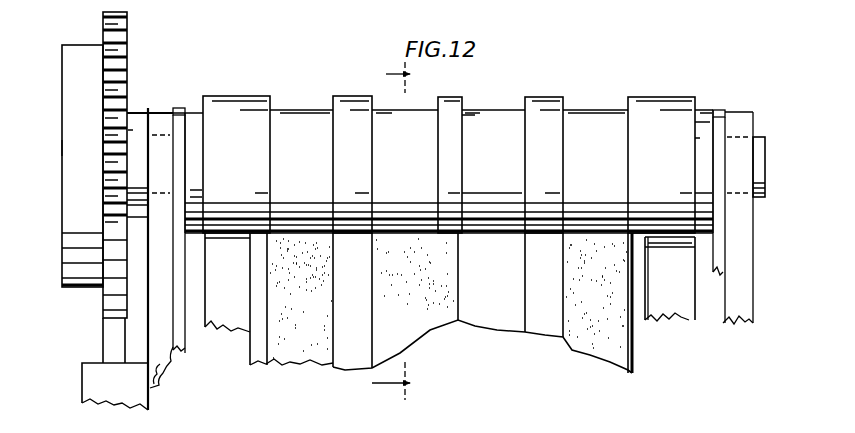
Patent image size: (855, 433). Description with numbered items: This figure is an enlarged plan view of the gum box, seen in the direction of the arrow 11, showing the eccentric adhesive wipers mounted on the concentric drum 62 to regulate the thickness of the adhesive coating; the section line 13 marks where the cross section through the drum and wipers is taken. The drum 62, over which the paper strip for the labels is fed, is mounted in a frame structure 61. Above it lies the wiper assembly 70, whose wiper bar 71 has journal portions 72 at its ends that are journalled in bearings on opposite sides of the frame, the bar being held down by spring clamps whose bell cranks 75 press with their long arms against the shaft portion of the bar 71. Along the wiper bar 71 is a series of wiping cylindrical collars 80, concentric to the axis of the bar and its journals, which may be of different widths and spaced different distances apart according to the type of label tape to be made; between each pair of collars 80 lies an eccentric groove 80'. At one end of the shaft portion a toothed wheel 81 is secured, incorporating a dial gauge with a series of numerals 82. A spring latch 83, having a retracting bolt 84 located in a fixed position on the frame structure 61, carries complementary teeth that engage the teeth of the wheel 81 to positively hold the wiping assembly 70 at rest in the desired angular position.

The viewing direction arrow 11 is at (60, 148).
The section line 13- 13 is at (389, 233).
The frame structure 61 is at (162, 370).
The drum 62 is at (674, 323).
The wiper assembly 70 is at (222, 82).
The wiper bar 71 is at (707, 120).
The journal portions 72 is at (758, 165).
The bell crank 75 is at (179, 110).
The wiping cylindrical collars 80 is at (342, 138).
The eccentric groove 80' is at (492, 135).
The toothed wheel 81 is at (113, 65).
The numerals 82 is at (63, 49).
The spring latch 83 is at (80, 381).
The retracting bolt 84 is at (110, 333).